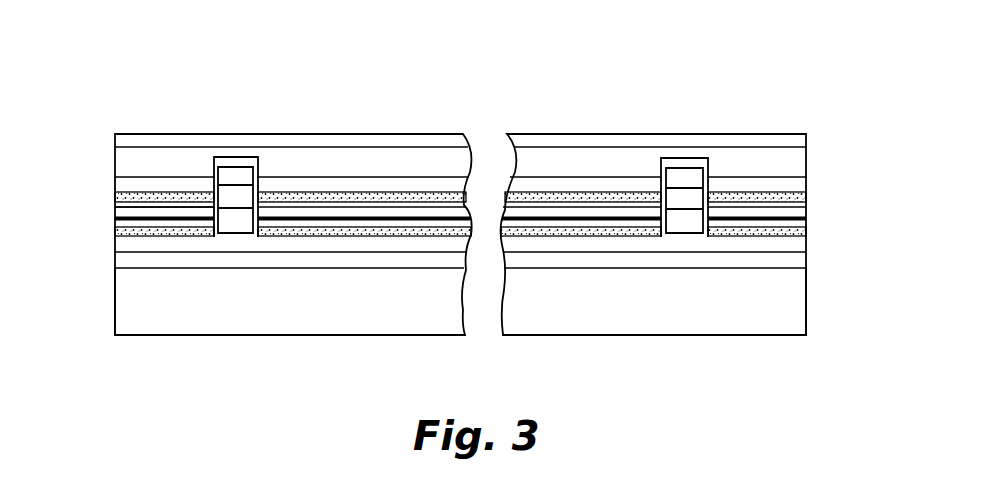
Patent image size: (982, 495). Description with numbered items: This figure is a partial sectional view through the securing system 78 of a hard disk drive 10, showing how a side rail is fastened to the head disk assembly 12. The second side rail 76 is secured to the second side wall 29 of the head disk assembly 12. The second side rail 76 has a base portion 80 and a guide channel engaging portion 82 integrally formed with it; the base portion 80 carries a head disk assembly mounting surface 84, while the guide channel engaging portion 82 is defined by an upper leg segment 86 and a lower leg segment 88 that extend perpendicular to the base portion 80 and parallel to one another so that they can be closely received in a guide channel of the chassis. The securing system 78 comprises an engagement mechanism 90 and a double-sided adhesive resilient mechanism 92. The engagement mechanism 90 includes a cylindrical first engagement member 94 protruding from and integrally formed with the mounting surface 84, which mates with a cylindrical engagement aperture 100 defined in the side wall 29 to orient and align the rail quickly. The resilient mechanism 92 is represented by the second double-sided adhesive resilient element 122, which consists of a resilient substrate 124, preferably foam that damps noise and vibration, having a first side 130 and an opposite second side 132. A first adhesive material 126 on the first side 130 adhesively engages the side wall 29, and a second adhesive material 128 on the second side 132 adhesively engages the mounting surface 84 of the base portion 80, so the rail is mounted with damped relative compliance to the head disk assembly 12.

The hard disk drive 10 is at (700, 42).
The head disk assembly 12 is at (593, 135).
The second side wall 29 is at (336, 144).
The second side rail 76 is at (807, 318).
The securing system 78 is at (807, 235).
The base portion 80 is at (540, 260).
The guide channel engaging portion 82 is at (188, 310).
The head disk assembly mounting surface 84 is at (758, 233).
The upper leg segment 86 is at (695, 178).
The lower leg segment 88 is at (250, 165).
The engagement mechanism 90 is at (694, 168).
The double-sided adhesive resilient mechanism 92 is at (112, 215).
The first engagement member 94 is at (230, 175).
The second engagement aperture 100 is at (668, 164).
The second double-sided adhesive resilient element 122 is at (790, 217).
The resilient substrate 124 is at (367, 218).
The first adhesive material 126 is at (406, 192).
The second adhesive material 128 is at (588, 236).
The first side 130 is at (535, 200).
The second side 132 is at (428, 236).